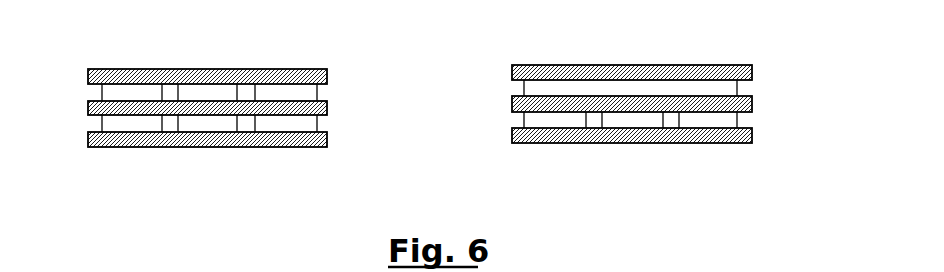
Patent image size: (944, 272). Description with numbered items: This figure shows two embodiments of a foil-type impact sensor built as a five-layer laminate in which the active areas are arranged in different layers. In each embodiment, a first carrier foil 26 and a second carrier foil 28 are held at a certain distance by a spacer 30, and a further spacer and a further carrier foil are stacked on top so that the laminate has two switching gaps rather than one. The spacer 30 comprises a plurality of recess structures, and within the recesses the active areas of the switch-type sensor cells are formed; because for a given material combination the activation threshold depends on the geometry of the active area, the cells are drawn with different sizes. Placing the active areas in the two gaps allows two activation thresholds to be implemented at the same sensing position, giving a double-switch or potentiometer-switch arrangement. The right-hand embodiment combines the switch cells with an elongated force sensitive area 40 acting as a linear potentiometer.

The first carrier foil 26 is at (327, 137).
The second carrier foil 28 is at (335, 72).
The spacer 30 is at (327, 90).
The force sensitive area 40 is at (685, 90).